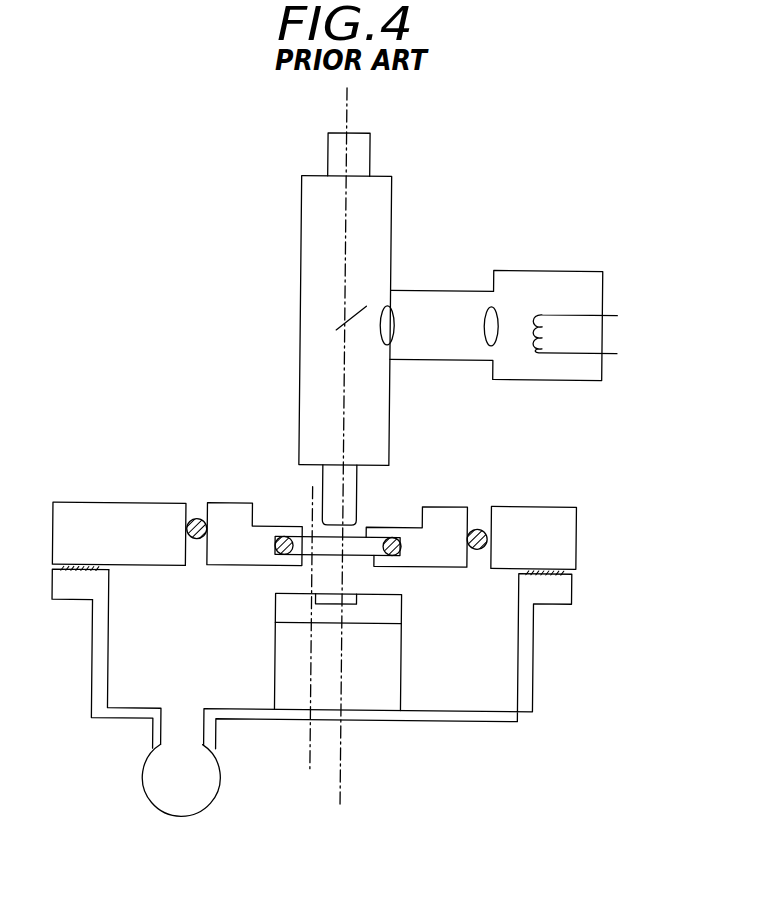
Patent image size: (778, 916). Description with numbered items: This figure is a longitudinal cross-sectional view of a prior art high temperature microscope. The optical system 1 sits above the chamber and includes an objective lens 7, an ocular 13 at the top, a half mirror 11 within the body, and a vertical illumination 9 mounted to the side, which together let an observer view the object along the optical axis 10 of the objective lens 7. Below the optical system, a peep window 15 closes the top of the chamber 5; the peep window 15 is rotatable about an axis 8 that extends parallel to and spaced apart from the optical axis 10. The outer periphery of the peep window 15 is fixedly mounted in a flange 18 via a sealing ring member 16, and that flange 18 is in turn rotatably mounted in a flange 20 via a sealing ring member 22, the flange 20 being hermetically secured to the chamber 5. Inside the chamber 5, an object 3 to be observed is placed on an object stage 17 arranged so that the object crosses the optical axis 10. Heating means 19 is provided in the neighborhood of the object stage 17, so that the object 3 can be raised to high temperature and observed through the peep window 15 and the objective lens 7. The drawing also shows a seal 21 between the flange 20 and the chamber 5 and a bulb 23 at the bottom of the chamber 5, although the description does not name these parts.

The optical system 1 is at (272, 225).
The object 3 is at (353, 601).
The chamber 5 is at (548, 639).
The objective lens 7 is at (354, 498).
The axis 8 is at (314, 760).
The vertical illumination 9 is at (450, 298).
The optical axis 10 is at (345, 784).
The half mirror 11 is at (335, 330).
The ocular 13 is at (362, 151).
The peep window 15 is at (367, 534).
The sealing ring member 16 is at (400, 548).
The object stage 17 is at (396, 615).
The flange 18 is at (224, 520).
The heating means 19 is at (298, 693).
The flange 20 is at (112, 515).
The seal 21 is at (78, 590).
The sealing ring member 22 is at (197, 518).
The reservoir bulb 23 is at (168, 783).